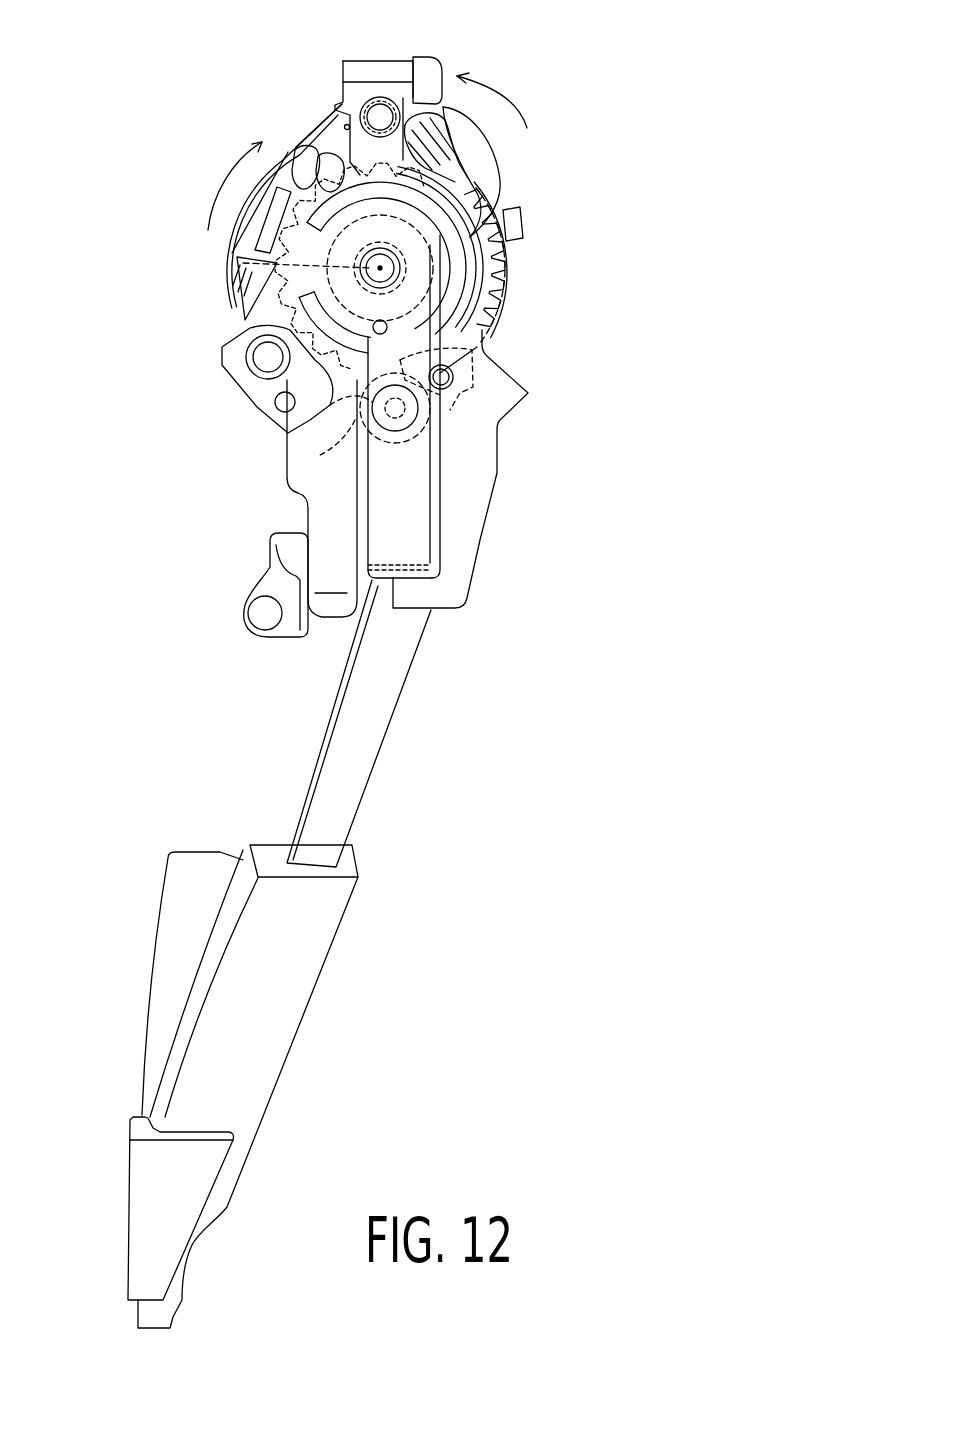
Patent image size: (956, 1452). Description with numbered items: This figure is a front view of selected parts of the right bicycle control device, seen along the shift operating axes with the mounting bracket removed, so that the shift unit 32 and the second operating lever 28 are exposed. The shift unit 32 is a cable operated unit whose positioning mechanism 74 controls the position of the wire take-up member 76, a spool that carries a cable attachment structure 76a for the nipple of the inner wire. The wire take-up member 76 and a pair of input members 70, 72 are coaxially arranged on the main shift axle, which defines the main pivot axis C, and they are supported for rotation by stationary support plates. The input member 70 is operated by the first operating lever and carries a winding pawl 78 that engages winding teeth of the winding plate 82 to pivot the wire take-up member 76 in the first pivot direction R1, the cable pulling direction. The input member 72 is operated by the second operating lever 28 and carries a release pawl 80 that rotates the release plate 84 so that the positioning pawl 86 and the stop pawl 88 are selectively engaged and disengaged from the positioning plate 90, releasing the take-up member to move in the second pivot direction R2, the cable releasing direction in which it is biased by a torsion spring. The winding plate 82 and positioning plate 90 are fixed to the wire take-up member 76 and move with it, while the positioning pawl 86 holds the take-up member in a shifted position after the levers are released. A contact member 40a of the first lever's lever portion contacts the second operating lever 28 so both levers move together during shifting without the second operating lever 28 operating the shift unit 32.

The second operating lever 28 is at (403, 693).
The shift unit 32 is at (583, 130).
The contact member 40a is at (277, 640).
The input member 70 is at (308, 507).
The input member 72 is at (495, 505).
The positioning mechanism 74 is at (290, 110).
The wire take-up member 76 is at (510, 292).
The cable attachment structure 76a is at (232, 222).
The winding pawl 78 is at (308, 412).
The release pawl 80 is at (463, 395).
The winding plate 82 is at (280, 318).
The release plate 84 is at (503, 187).
The positioning pawl 86 is at (316, 112).
The stop pawl 88 is at (455, 143).
The positioning plate 90 is at (502, 270).
The main pivot axis C is at (376, 270).
The first pivot direction R1 is at (527, 128).
The second pivot direction R2 is at (228, 190).